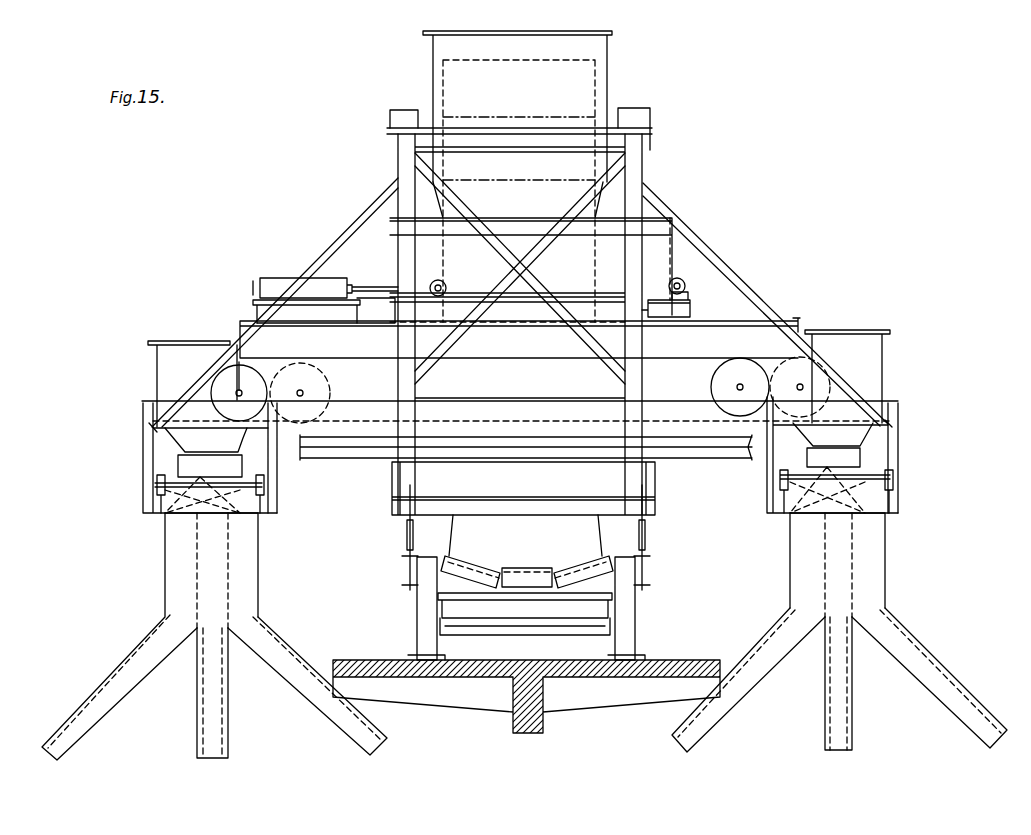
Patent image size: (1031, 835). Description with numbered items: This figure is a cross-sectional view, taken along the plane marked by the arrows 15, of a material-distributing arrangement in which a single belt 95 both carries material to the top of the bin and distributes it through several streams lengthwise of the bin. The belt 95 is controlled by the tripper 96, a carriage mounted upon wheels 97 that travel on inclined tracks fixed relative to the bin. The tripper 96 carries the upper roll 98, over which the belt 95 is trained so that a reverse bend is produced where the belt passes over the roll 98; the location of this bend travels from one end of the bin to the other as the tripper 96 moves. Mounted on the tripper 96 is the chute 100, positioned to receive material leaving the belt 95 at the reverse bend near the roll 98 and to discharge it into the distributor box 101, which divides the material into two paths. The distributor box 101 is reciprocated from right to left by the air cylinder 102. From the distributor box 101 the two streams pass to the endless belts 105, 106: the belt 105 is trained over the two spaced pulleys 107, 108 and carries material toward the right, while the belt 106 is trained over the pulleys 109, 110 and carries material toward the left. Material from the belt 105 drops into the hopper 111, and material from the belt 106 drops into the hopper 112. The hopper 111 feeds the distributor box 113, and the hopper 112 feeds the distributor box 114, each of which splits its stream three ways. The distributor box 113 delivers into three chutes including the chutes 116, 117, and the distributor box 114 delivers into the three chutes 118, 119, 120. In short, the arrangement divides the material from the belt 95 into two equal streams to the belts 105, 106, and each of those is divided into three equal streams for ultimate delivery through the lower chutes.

The section plane arrows 15 is at (940, 683).
The belt 95 is at (500, 570).
The tripper 96 is at (518, 134).
The wheels 97 is at (776, 481).
The upper roll 98 is at (607, 78).
The chute 100 is at (432, 49).
The distributor box 101 is at (690, 245).
The air cylinder 102 is at (283, 280).
The endless belt 105 is at (803, 434).
The endless belt 106 is at (278, 463).
The pulley 107 is at (818, 408).
The pulley 108 is at (332, 383).
The pulley 109 is at (708, 385).
The pulley 110 is at (265, 372).
The hopper 111 is at (843, 340).
The hopper 112 is at (190, 345).
The distributor box 113 is at (895, 458).
The distributor box 114 is at (165, 478).
The chute 116 is at (850, 719).
The chute 117 is at (718, 720).
The chute 118 is at (305, 660).
The chute 119 is at (222, 729).
The chute 120 is at (110, 682).